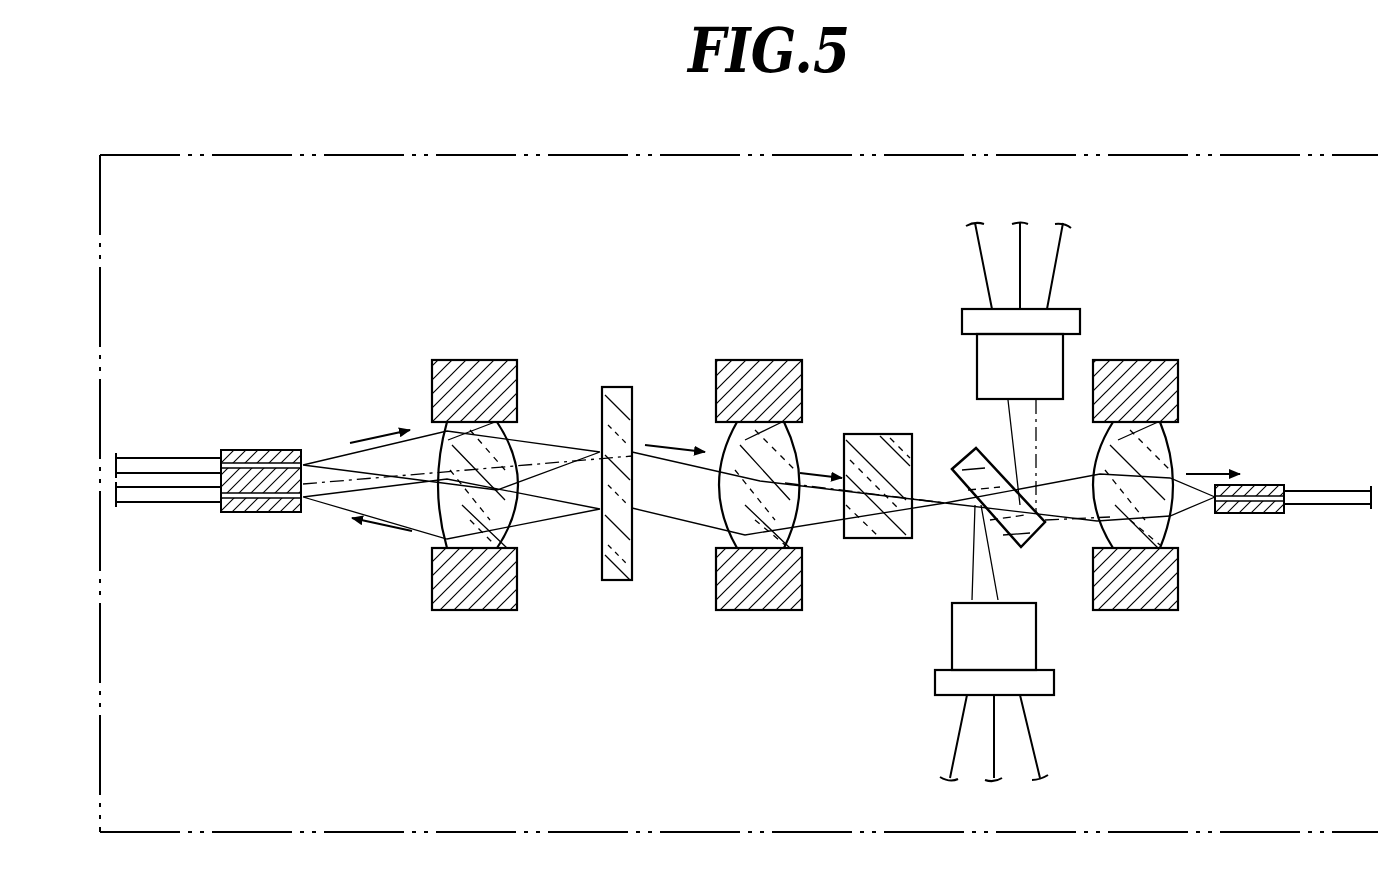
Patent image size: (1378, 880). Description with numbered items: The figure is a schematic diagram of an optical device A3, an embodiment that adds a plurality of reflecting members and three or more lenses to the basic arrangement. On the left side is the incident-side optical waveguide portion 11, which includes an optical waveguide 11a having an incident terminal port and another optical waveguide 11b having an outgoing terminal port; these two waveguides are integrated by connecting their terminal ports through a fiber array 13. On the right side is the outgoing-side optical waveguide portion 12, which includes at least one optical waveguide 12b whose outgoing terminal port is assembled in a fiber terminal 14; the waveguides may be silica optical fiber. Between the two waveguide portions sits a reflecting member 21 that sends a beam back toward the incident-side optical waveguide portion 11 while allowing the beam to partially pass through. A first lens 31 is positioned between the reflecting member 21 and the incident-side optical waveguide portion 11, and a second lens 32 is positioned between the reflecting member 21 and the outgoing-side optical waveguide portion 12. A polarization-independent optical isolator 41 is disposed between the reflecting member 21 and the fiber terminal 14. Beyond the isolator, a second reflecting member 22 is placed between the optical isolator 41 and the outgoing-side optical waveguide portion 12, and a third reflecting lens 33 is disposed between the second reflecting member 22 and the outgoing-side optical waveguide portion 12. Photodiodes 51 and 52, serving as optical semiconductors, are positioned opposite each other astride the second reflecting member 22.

The optical device A3 is at (1037, 155).
The incident-side optical waveguide portion 11 is at (223, 466).
The optical waveguide 11a is at (164, 457).
The optical waveguide 11b is at (178, 503).
The fiber array 13 is at (262, 450).
The first lens 31 is at (440, 430).
The reflecting member 21 is at (602, 418).
The second lens 32 is at (725, 430).
The optical isolator 41 is at (858, 434).
The second reflecting member 22 is at (972, 450).
The photodiode 51 is at (1045, 350).
The photodiode 52 is at (1028, 648).
The third reflecting lens 33 is at (1155, 437).
The outgoing-side optical waveguide portion 12 is at (1288, 433).
The fiber terminal 14 is at (1262, 486).
The optical waveguide 12b is at (1312, 490).